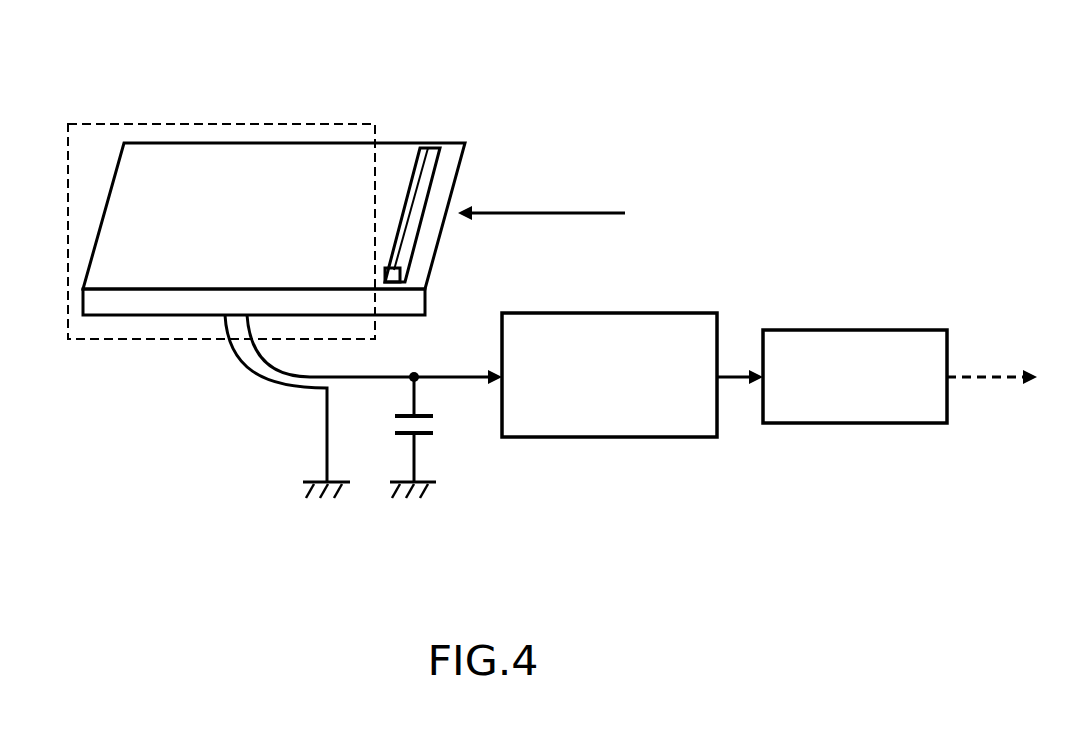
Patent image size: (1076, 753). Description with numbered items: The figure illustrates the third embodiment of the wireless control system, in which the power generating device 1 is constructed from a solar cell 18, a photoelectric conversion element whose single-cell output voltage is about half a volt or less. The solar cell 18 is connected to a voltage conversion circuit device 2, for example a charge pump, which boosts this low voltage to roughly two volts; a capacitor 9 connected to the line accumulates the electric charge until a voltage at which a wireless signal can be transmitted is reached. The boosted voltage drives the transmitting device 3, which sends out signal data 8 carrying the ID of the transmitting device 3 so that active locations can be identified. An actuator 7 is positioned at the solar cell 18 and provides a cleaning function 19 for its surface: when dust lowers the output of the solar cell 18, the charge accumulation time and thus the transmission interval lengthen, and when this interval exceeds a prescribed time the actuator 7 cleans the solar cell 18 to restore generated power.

The power generating device 1 is at (150, 122).
The solar cell 18 is at (277, 143).
The cleaning function 19 is at (428, 143).
The actuator 7 is at (517, 214).
The capacitor 9 is at (437, 428).
The voltage conversion circuit device 2 is at (602, 437).
The transmitting device 3 is at (840, 330).
The signal data 8 is at (983, 377).